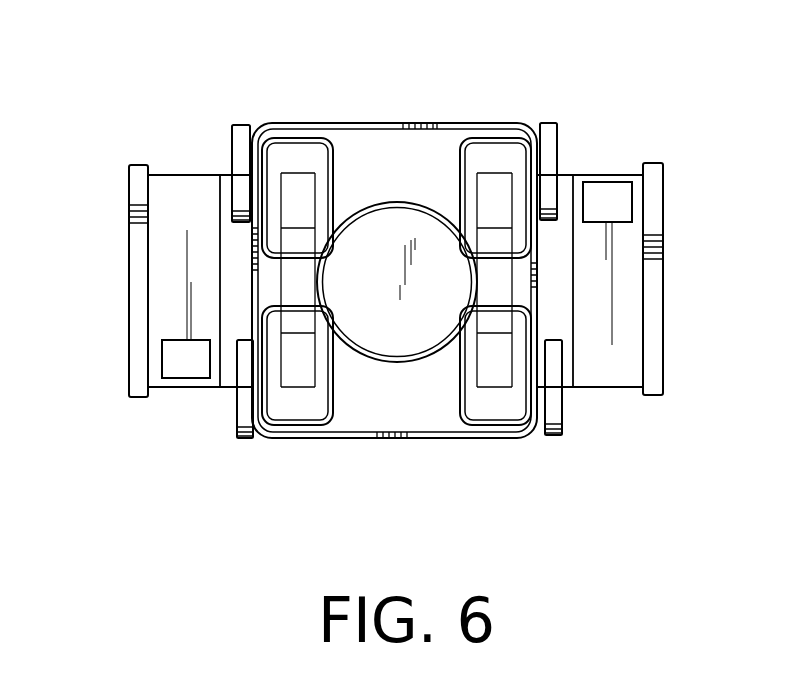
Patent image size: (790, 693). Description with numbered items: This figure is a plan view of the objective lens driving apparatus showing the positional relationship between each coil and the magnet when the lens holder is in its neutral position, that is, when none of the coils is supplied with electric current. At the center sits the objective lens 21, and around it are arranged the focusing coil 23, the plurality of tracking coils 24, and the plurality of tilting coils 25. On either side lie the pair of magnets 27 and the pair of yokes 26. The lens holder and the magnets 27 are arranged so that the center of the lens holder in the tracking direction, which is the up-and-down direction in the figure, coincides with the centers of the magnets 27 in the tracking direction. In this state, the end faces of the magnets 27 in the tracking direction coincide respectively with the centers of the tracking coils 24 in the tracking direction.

The objective lens 21 is at (398, 233).
The focusing coil 23 is at (533, 285).
The tracking coils 24 is at (242, 125).
The tilting coils 25 is at (305, 138).
The yokes 26 is at (133, 165).
The magnets 27 is at (173, 175).